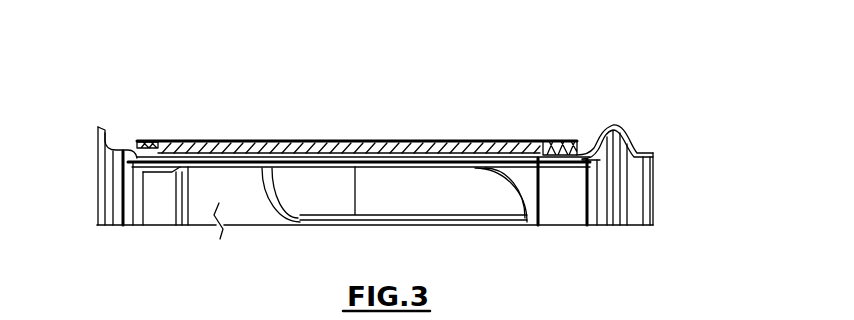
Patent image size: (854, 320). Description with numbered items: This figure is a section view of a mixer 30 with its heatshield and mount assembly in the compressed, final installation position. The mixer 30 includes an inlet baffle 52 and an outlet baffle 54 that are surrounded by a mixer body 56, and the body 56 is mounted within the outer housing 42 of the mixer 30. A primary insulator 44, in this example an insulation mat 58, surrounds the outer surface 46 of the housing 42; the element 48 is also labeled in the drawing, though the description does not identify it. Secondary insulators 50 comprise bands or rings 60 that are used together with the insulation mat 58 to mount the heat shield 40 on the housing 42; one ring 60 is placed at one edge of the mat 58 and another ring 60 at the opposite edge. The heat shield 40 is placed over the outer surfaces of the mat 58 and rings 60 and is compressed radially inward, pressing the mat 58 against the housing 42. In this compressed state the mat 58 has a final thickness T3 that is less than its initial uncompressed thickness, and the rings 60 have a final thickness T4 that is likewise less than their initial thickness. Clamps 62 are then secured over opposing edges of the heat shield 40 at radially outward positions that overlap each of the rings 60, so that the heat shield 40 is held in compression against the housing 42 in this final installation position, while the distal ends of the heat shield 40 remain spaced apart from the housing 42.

The mixer 30 is at (700, 74).
The heat shield 40 is at (550, 140).
The outer housing 42 is at (632, 142).
The primary insulator 44 is at (205, 141).
The outer surface 46 is at (300, 162).
The adhesive layer 48 is at (413, 140).
The secondary insulators 50 is at (125, 158).
The inlet baffle 52 is at (300, 194).
The outlet baffle 54 is at (521, 199).
The mixer body 56 is at (333, 168).
The insulation mat 58 is at (441, 140).
The rings 60 is at (110, 141).
The clamps 62 is at (157, 141).
The final thickness T3 is at (497, 128).
The final thickness T4 is at (550, 168).